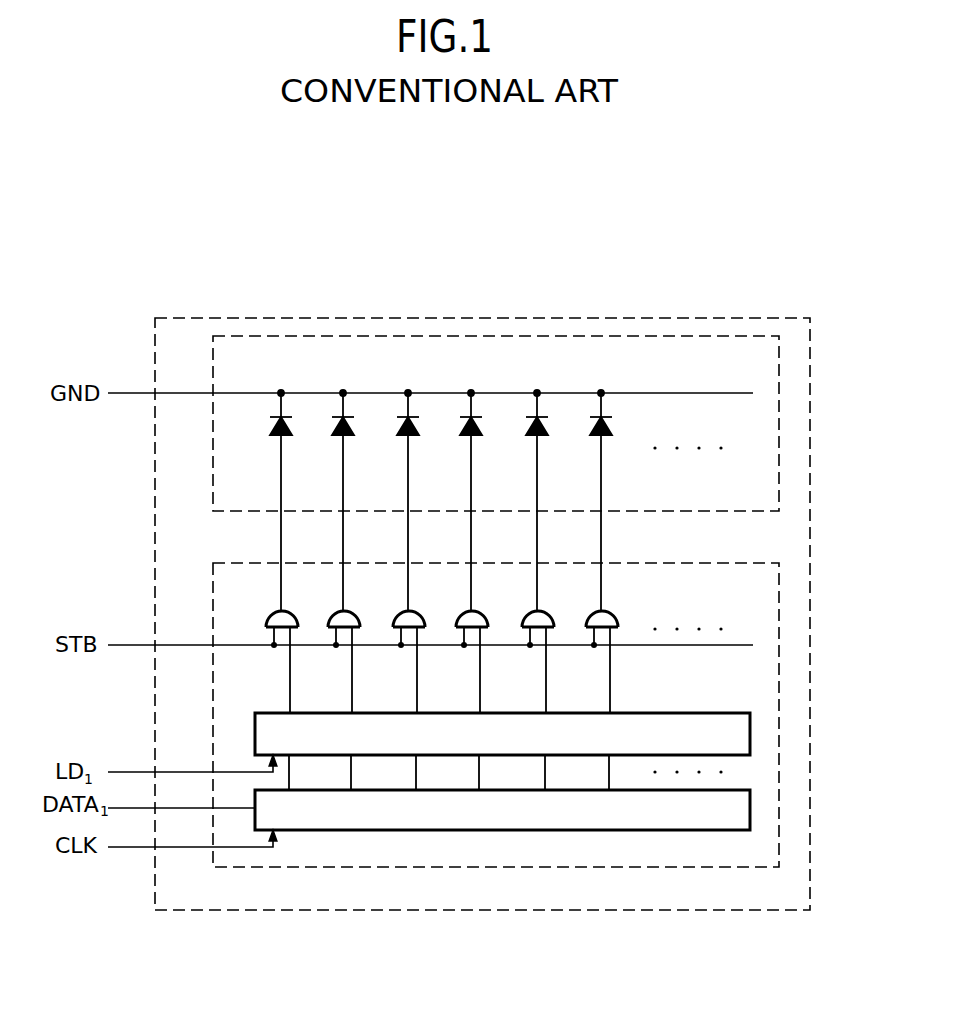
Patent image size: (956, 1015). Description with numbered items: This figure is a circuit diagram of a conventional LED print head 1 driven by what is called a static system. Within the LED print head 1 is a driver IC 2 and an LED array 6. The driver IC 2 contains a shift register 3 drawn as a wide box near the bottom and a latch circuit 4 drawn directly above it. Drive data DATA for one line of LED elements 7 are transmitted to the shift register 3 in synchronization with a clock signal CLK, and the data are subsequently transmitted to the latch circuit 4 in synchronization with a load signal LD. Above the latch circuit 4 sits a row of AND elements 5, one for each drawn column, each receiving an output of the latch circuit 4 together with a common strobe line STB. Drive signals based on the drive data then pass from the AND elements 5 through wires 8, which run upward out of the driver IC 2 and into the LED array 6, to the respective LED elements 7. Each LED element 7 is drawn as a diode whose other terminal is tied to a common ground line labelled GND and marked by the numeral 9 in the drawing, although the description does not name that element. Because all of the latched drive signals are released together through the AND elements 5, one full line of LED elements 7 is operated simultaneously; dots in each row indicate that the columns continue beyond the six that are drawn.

The LED print head 1 is at (810, 338).
The driver IC 2 is at (779, 617).
The shift register 3 is at (750, 810).
The latch circuit 4 is at (750, 738).
The AND element 5 is at (270, 612).
The LED array 6 is at (779, 410).
The LED element 7 is at (272, 434).
The wire 8 is at (601, 533).
The ground (GND) line 9 is at (127, 393).